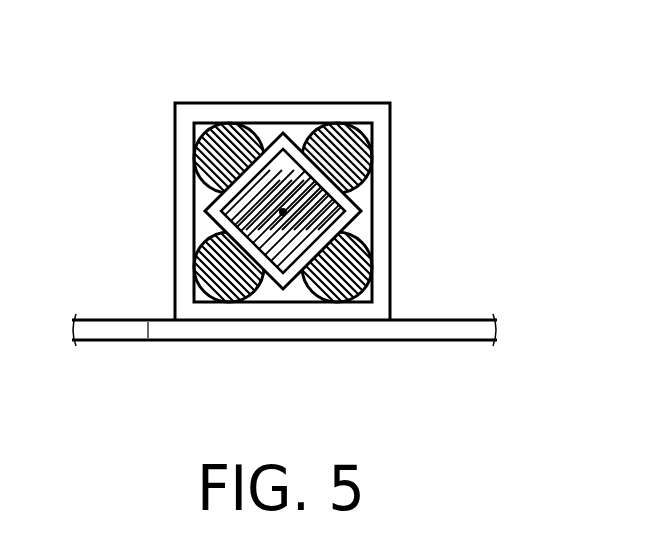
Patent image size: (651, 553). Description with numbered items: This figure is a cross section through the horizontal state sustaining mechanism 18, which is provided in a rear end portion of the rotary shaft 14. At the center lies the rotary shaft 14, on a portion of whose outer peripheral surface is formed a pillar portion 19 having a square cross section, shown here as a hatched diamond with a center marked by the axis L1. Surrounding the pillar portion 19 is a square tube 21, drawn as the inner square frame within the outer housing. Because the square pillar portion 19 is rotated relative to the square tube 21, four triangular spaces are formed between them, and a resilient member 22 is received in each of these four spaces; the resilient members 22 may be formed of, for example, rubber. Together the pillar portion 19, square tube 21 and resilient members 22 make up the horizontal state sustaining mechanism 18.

The horizontal state sustaining mechanism 18 is at (368, 86).
The square tube 21 is at (208, 103).
The resilient members 22 is at (197, 228).
The pillar portion 19 is at (285, 146).
The rotary shaft 14 is at (282, 248).
The axis L1 is at (283, 212).